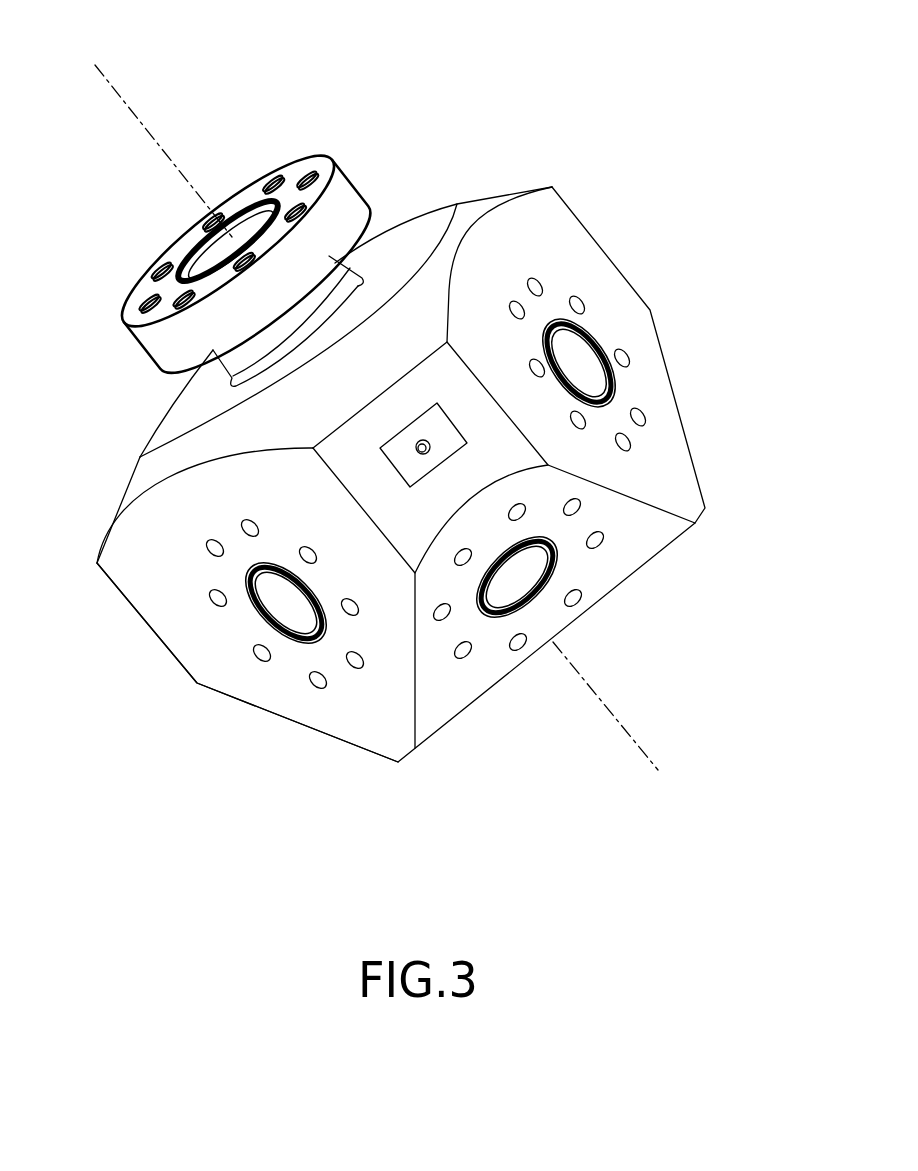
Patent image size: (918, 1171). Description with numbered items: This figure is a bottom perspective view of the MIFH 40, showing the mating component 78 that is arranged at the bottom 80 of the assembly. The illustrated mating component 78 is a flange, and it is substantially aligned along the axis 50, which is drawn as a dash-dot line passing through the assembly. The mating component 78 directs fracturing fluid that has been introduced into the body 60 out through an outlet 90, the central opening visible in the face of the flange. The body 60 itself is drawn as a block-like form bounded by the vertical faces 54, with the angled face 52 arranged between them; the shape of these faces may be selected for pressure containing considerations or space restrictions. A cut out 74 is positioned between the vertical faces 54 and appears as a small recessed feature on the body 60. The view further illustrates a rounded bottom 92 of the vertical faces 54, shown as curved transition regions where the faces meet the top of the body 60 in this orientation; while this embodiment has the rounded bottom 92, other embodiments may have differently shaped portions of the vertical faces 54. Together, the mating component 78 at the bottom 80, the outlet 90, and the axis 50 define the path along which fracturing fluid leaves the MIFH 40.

The MIFH 40 is at (410, 421).
The axis 50 is at (95, 66).
The angled face 52 is at (692, 541).
The vertical faces 54 is at (537, 208).
The body 60 is at (197, 685).
The cut out 74 is at (404, 400).
The mating component 78 is at (221, 200).
The bottom 80 is at (221, 219).
The outlet 90 is at (182, 235).
The rounded bottom 92 is at (478, 210).